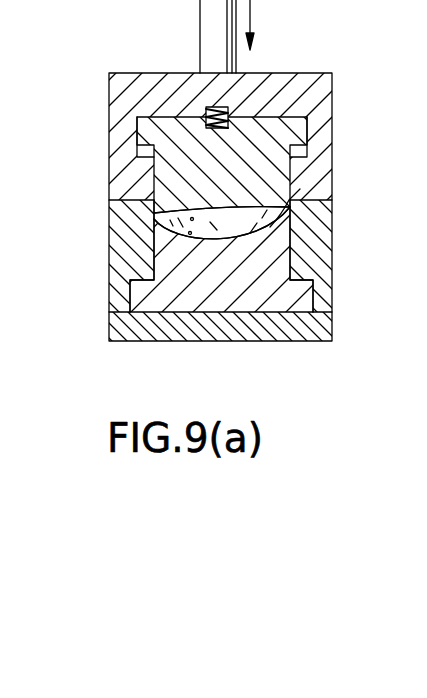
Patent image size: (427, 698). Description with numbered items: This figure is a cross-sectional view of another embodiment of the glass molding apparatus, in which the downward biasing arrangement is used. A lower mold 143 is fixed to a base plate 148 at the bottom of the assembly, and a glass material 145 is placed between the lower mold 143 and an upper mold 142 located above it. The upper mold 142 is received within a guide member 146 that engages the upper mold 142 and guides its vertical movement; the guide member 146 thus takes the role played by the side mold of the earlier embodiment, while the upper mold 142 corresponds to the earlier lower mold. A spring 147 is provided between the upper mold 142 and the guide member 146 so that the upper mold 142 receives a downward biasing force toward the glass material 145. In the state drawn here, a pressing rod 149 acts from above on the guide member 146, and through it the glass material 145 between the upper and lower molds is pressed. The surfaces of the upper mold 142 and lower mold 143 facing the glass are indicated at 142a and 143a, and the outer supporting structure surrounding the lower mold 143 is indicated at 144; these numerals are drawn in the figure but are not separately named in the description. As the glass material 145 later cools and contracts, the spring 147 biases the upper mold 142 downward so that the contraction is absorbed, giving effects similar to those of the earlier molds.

The upper mold 142 is at (279, 173).
The lens contact surface of upper holder 142a is at (170, 214).
The lower mold 143 is at (272, 303).
The lens contact surface of lower holder 143a is at (183, 238).
The lower housing 144 is at (330, 250).
The glass material 145 is at (266, 212).
The guide member 146 is at (330, 113).
The spring 147 is at (216, 107).
The base plate 148 is at (200, 343).
The pressing rod 149 is at (237, 61).